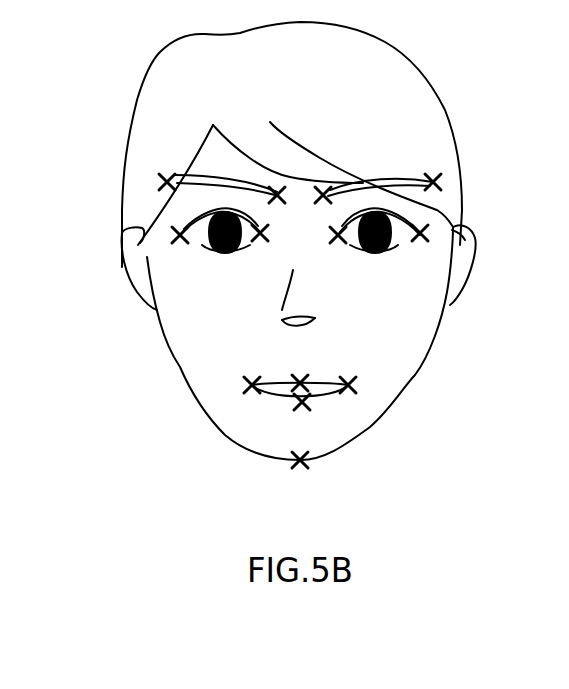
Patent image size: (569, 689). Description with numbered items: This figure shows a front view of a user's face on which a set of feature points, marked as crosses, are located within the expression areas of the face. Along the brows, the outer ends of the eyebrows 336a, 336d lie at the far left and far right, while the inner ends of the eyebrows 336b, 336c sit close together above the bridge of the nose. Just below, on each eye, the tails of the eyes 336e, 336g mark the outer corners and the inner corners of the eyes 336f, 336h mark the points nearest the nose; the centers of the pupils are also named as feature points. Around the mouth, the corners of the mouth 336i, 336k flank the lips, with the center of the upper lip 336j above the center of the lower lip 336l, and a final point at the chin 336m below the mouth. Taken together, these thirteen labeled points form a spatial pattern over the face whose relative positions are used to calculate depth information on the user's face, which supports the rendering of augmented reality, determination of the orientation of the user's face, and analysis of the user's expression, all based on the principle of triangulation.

The end of eyebrow 336a is at (160, 182).
The inner end of eyebrow 336b is at (276, 190).
The inner end of eyebrow 336c is at (323, 190).
The end of eyebrow 336d is at (440, 182).
The tail of eye 336e is at (179, 240).
The inner corner of eye 336f is at (259, 243).
The tail of eye 336g is at (420, 241).
The inner corner of eye 336h is at (340, 243).
The corner of mouth 336i is at (251, 393).
The center of upper lip 336j is at (300, 380).
The corner of mouth 336k is at (356, 386).
The center of lower lip 336l is at (303, 410).
The chin 336m is at (299, 468).